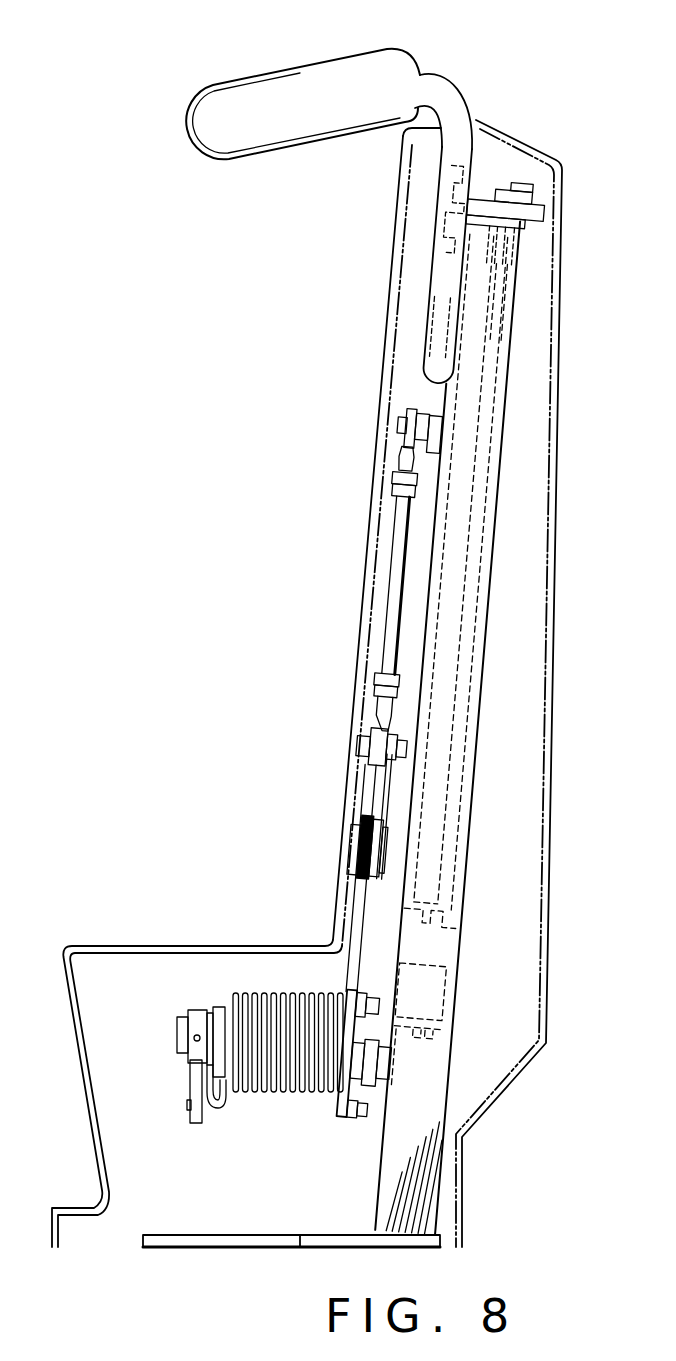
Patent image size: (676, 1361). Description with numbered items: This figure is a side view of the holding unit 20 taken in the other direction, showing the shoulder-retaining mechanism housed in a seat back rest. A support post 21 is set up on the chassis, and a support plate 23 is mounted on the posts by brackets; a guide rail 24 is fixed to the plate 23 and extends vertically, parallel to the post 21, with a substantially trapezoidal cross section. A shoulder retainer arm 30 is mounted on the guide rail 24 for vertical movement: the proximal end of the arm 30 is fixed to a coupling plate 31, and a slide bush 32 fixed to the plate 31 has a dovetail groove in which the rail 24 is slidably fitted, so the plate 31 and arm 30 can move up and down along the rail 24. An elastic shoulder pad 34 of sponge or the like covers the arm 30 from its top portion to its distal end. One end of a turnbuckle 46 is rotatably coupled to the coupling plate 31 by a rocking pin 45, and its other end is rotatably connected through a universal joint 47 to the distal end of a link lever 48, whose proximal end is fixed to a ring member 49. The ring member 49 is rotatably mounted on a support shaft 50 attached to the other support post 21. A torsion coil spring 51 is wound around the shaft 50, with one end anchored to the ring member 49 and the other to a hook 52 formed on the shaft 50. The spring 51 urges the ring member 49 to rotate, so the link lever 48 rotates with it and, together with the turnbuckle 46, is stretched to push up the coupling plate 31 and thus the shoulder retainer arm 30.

The control handle assembly 20 is at (312, 477).
The support post 21 is at (387, 1193).
The support plate 23 is at (463, 733).
The guide rail 24 is at (460, 568).
The shoulder retainer arm 30 is at (467, 110).
The coupling plate 31 is at (425, 357).
The slide bush 32 is at (475, 330).
The elastic shoulder pad 34 is at (279, 83).
The rocking pin 45 is at (400, 423).
The turnbuckle 46 is at (388, 602).
The universal joint 47 is at (358, 748).
The link lever 48 is at (355, 858).
The ring member 49 is at (338, 1123).
The support shaft 50 is at (177, 1035).
The torsion coil spring 51 is at (254, 988).
The hook 52 is at (197, 1123).